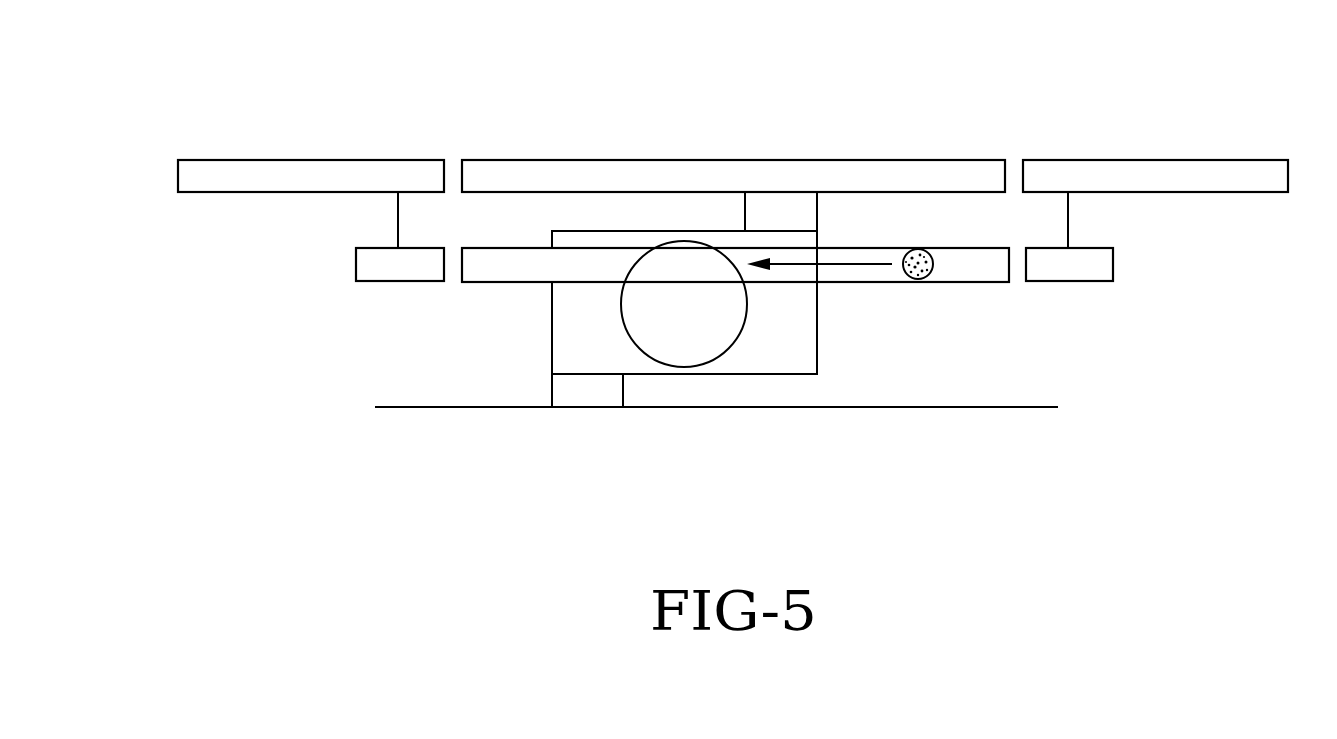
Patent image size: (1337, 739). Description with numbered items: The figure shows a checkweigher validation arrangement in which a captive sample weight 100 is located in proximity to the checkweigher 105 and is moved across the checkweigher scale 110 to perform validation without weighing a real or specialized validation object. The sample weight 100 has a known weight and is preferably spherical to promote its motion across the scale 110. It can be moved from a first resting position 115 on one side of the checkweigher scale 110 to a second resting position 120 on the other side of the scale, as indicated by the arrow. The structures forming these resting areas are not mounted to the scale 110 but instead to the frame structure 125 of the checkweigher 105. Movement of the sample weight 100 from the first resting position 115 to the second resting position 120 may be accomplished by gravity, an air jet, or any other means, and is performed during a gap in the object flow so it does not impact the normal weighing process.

The captive sample weight 100 is at (932, 276).
The checkweigher 105 is at (757, 388).
The checkweigher scale 110 is at (572, 342).
The first resting position 115 is at (1157, 376).
The second resting position 120 is at (370, 376).
The frame structure 125 is at (296, 160).